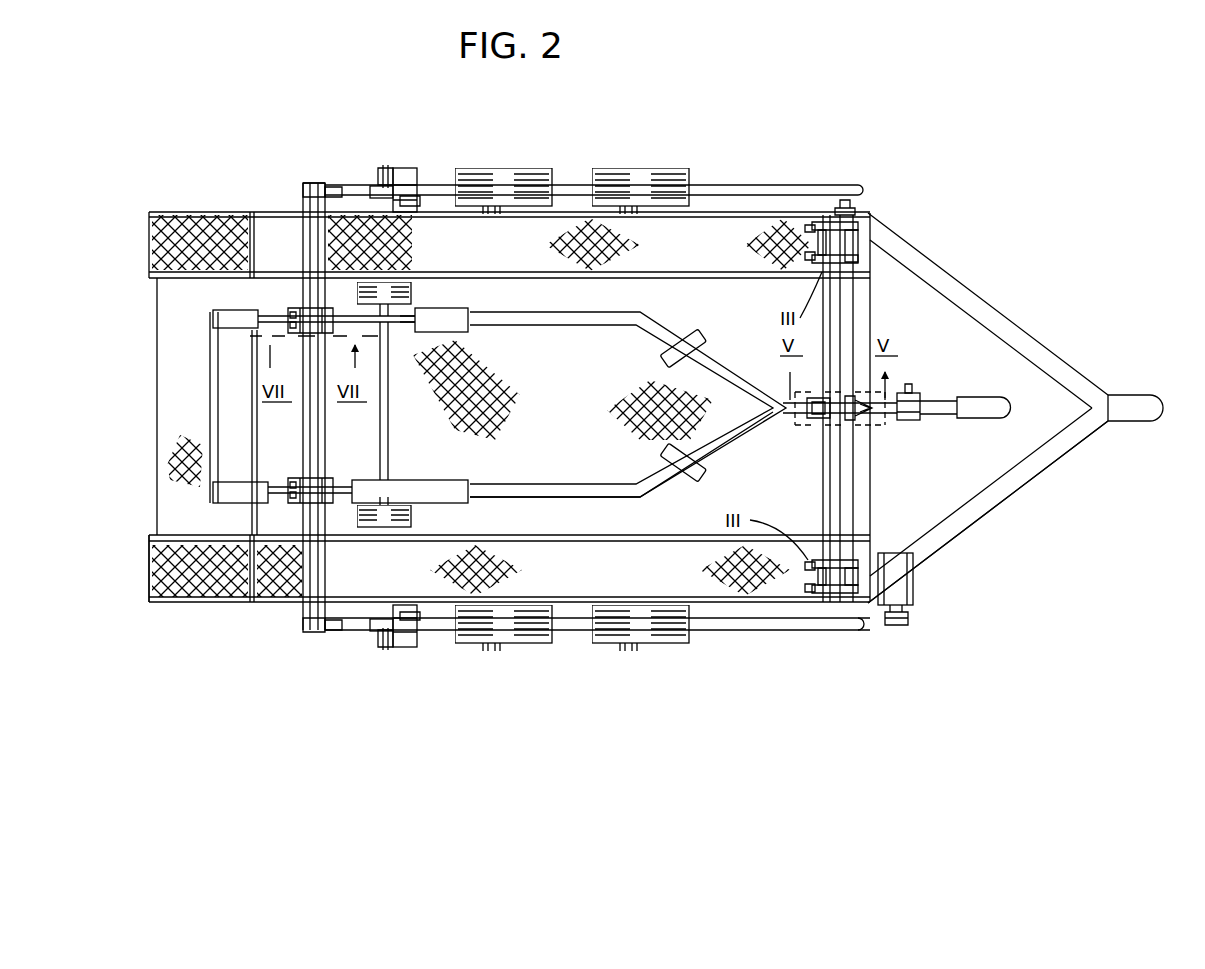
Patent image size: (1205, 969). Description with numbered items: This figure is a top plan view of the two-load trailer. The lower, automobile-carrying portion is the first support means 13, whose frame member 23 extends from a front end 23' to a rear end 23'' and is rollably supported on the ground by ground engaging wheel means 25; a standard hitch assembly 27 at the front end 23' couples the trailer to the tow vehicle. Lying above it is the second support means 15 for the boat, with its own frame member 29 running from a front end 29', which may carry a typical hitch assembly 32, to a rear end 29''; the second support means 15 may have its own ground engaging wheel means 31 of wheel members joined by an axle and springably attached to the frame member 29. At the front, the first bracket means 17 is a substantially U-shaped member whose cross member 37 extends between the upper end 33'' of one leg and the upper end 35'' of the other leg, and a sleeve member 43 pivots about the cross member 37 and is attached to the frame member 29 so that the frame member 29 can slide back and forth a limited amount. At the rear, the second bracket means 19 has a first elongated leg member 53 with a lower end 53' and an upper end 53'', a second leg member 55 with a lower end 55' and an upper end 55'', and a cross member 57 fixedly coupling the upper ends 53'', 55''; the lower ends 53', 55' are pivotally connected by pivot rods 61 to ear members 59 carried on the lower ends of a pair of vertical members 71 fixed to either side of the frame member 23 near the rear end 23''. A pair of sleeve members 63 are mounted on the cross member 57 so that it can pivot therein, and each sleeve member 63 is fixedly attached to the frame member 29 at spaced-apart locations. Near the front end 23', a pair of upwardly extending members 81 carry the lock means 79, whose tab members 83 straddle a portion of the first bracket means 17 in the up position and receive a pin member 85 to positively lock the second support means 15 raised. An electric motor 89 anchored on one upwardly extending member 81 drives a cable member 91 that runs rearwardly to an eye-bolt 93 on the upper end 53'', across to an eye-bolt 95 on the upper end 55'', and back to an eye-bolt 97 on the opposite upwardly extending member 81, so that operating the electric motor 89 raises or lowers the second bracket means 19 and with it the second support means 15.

The first support means 13 is at (758, 605).
The second support means 15 is at (602, 500).
The first bracket means 17 is at (855, 315).
The second bracket means 19 is at (300, 440).
The frame member 23 is at (988, 408).
The front end 23' is at (1008, 512).
The rear end 23'' is at (205, 590).
The ground engaging wheel means 25 is at (598, 178).
The hitch assembly 27 is at (1163, 400).
The frame member 29 is at (569, 405).
The front end 29' is at (965, 428).
The rear end 29'' is at (291, 420).
The ground engaging wheel means 31 is at (413, 294).
The hitch assembly 32 is at (920, 398).
The upper end 33'' is at (881, 614).
The upper end 35'' is at (856, 179).
The cross member 37 is at (830, 445).
The sleeve member 43 is at (860, 420).
The first elongated leg member 53 is at (597, 651).
The lower end 53' is at (402, 651).
The upper end 53'' is at (287, 630).
The second leg member 55 is at (594, 156).
The lower end 55' is at (421, 164).
The upper end 55'' is at (293, 175).
The cross member 57 is at (312, 428).
The ear members 59 is at (388, 168).
The pivot rods 61 is at (405, 168).
The sleeve members 63 is at (300, 310).
The vertical members 71 is at (420, 200).
The lock means 79 is at (810, 268).
The upwardly extending members 81 is at (833, 480).
The tab members 83 is at (862, 258).
The pin member 85 is at (822, 222).
The electric motor 89 is at (915, 580).
The cable member 91 is at (790, 632).
The eye-bolt 93 is at (330, 632).
The eye-bolt 95 is at (345, 185).
The eye-bolt 97 is at (855, 220).